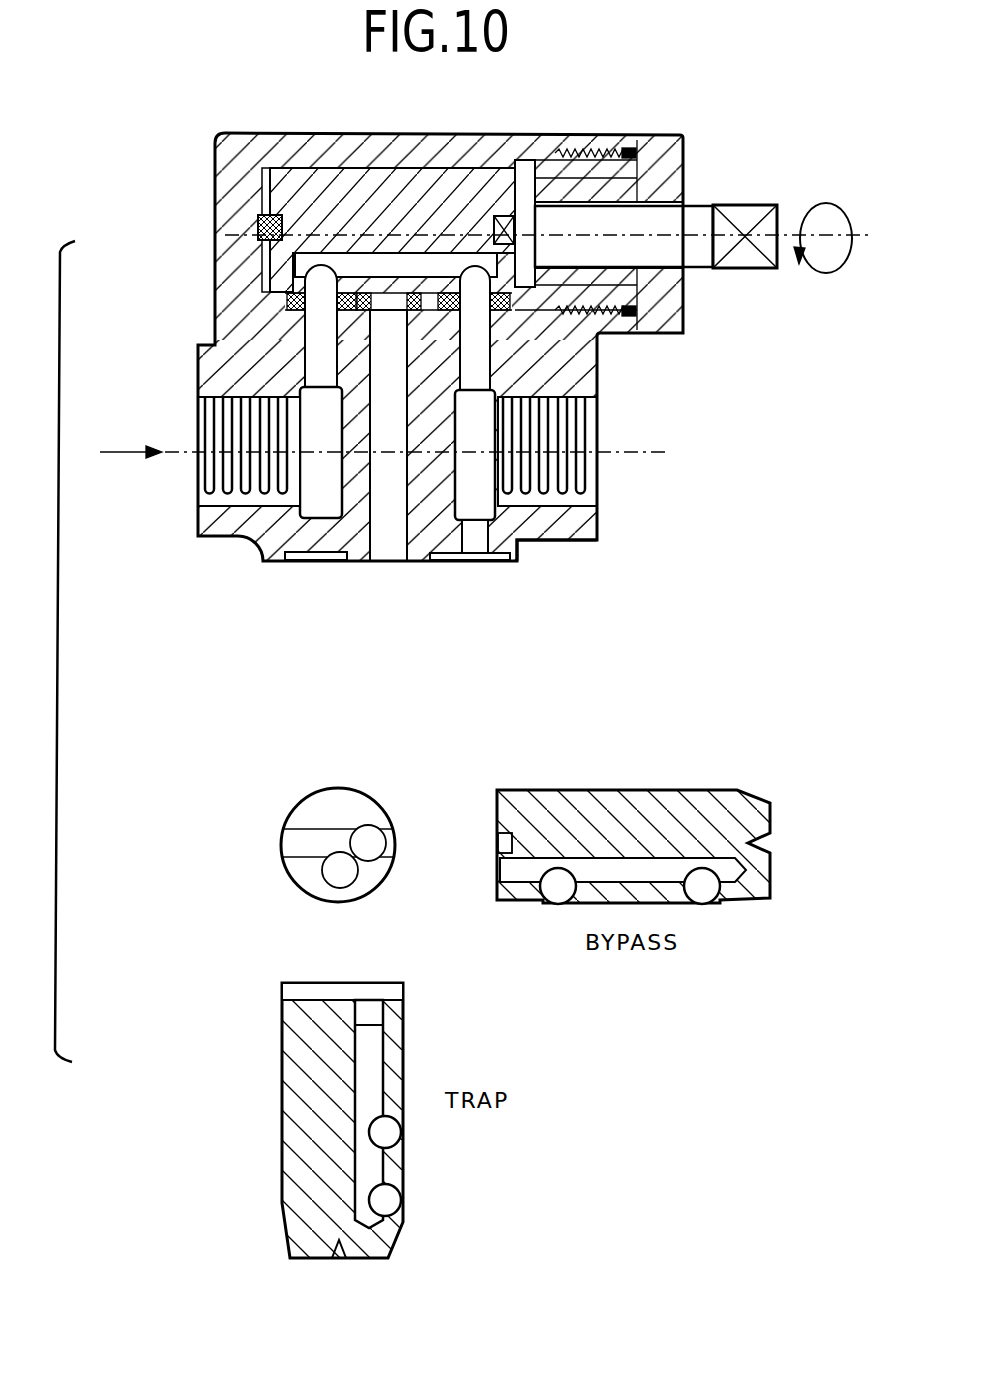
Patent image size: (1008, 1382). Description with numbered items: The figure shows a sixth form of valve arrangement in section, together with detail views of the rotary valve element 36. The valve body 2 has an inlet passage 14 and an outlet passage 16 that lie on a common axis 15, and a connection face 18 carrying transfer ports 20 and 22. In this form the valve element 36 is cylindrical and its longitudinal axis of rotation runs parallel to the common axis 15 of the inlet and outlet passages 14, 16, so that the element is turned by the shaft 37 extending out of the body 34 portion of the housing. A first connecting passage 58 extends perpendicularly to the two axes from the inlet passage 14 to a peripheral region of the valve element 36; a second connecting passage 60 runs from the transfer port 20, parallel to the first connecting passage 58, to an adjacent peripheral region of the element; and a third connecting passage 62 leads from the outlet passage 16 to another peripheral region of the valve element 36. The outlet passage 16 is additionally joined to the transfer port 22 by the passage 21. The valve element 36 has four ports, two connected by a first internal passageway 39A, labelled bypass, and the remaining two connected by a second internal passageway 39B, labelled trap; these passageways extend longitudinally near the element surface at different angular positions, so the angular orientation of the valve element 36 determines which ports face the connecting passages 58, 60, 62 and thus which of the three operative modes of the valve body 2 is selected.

The valve body 2 is at (603, 104).
The housing 34 is at (222, 168).
The valve element 36 is at (456, 137).
The shaft 37 is at (687, 252).
The first connecting passage 58 is at (317, 347).
The third connecting passage 62 is at (477, 352).
The common axis 15 is at (165, 456).
The inlet passage 14 is at (197, 476).
The outlet passage 16 is at (600, 470).
The passage 21 is at (475, 525).
The connection face 18 is at (523, 546).
The second connecting passage 60 is at (362, 552).
The transfer port 20 is at (387, 520).
The transfer port 22 is at (442, 565).
The first internal passageway 39A is at (608, 872).
The second internal passageway 39B is at (373, 1057).